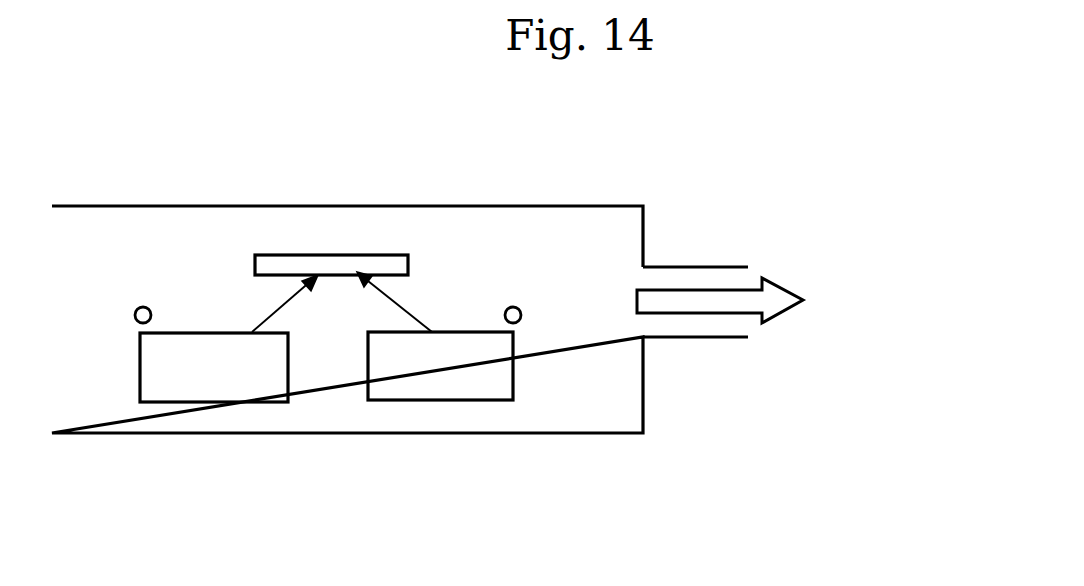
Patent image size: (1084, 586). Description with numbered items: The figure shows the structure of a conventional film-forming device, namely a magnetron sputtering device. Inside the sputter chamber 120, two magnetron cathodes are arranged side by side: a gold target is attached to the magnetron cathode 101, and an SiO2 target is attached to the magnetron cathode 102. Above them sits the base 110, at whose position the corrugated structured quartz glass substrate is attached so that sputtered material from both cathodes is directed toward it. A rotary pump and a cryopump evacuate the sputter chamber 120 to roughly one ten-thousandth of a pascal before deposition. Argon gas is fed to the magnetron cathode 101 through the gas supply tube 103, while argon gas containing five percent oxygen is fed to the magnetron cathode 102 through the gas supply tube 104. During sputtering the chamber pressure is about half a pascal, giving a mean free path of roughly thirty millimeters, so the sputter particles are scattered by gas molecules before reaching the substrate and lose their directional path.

The sputter chamber 120 is at (207, 242).
The base 110 is at (340, 257).
The magnetron cathode 101 is at (433, 387).
The magnetron cathode 102 is at (207, 383).
The gas supply tube 103 is at (517, 308).
The gas supply tube 104 is at (137, 309).